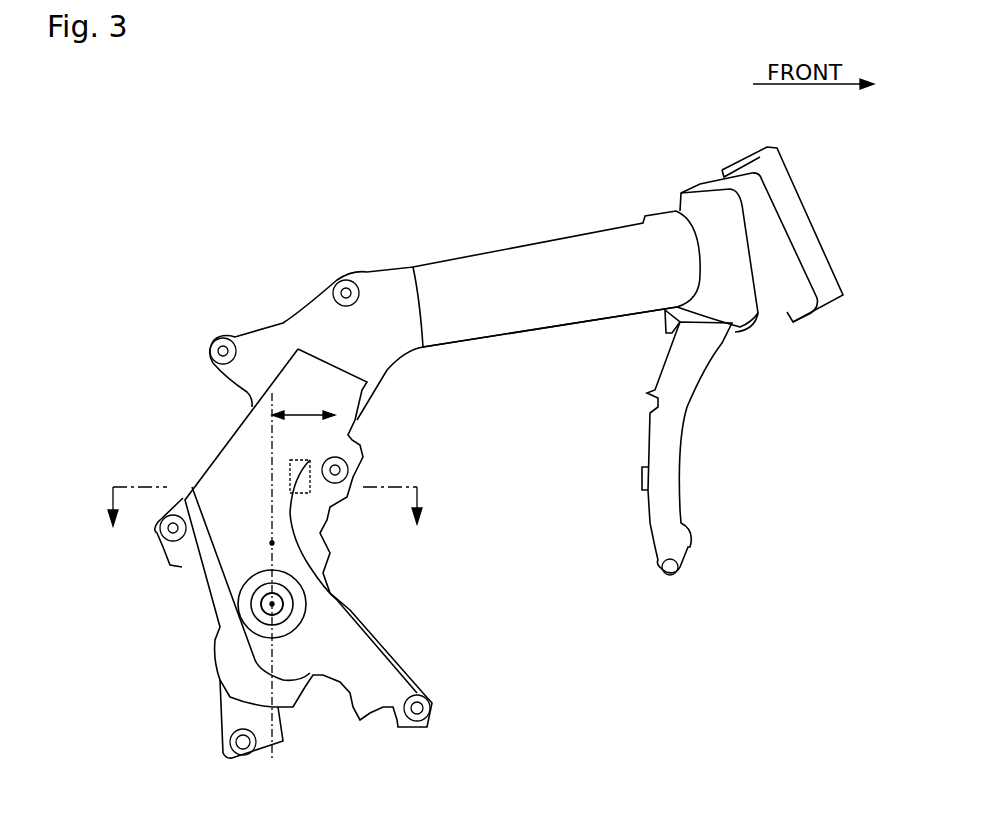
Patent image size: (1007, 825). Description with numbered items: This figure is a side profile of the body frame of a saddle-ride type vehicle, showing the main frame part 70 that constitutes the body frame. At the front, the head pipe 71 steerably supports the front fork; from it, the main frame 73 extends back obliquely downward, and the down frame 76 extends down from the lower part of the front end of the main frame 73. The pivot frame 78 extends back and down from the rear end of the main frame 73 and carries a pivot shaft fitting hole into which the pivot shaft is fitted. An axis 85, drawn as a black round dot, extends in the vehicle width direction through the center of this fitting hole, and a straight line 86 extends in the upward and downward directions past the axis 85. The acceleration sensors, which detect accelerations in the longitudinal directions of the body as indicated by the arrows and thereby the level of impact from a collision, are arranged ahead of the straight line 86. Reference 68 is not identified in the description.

The main frame part 70 is at (478, 208).
The head pipe 71 is at (800, 220).
The main frame 73 is at (543, 257).
The lower edge of main frame 68 is at (492, 338).
The down frame 76 is at (678, 433).
The pivot frame 78 is at (278, 323).
The axis 85 is at (282, 603).
The straight line 86 is at (272, 543).